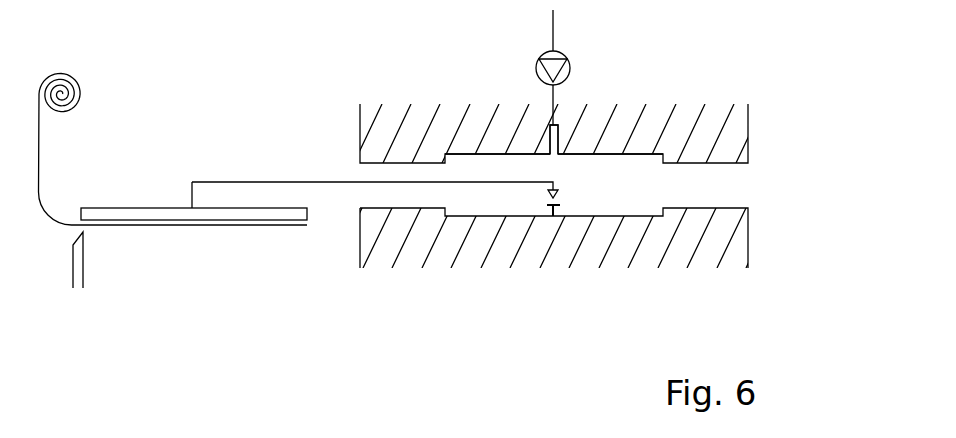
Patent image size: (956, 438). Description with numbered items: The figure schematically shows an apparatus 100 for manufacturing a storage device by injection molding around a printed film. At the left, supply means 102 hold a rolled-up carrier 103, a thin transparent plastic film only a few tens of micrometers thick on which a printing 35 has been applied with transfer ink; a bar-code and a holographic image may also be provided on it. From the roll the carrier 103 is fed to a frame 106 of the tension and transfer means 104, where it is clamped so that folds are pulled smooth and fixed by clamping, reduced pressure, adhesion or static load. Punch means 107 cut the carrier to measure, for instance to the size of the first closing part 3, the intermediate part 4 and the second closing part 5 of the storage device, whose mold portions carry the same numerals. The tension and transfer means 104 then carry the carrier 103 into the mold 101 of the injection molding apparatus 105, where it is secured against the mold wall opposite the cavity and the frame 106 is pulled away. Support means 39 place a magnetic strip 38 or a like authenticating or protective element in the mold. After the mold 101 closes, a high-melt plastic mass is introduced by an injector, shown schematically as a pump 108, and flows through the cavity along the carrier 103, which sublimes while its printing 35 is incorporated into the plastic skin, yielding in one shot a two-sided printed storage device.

The first closing part 3 is at (472, 165).
The intermediate part 4 is at (557, 147).
The second closing part 5 is at (637, 165).
The printing 35 is at (48, 159).
The magnetic strip 38 is at (562, 203).
The support means 39 is at (560, 212).
The apparatus 100 is at (293, 296).
The mold 101 is at (730, 138).
The supply means 102 is at (219, 96).
The carrier 103 is at (45, 218).
The tension and transfer means 104 is at (144, 244).
The injection molding apparatus 105 is at (553, 289).
The frame 106 is at (243, 213).
The punch means 107 is at (78, 272).
The pump 108 is at (560, 52).